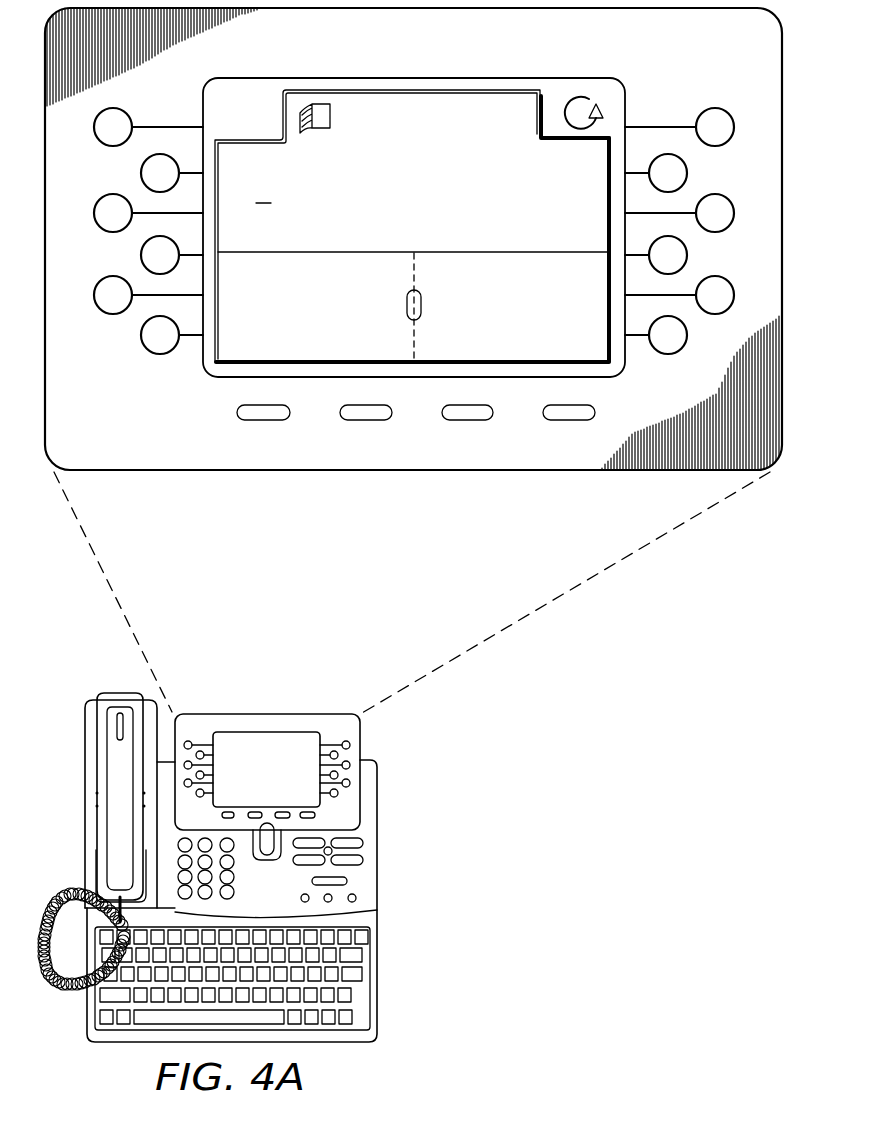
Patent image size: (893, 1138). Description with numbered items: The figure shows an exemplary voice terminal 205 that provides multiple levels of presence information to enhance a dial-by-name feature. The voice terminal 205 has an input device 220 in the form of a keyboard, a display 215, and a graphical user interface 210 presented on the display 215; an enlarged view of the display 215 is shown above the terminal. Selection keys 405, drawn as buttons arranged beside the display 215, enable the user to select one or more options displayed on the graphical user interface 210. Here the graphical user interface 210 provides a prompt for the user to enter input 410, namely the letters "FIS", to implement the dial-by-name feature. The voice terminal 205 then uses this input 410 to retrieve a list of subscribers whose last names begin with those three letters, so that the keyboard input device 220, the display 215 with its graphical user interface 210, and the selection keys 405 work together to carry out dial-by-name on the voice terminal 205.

The voice terminal 205 is at (251, 867).
The graphical user interface 210 is at (477, 334).
The display 215 is at (412, 78).
The input device 220 is at (378, 973).
The selection keys 405 is at (714, 108).
The input 410 is at (259, 194).